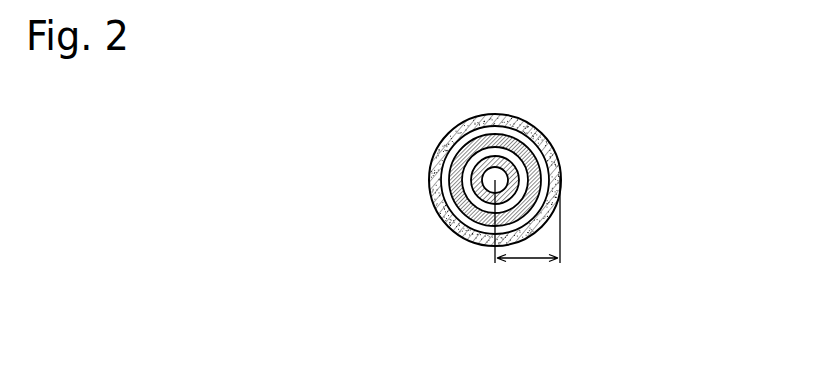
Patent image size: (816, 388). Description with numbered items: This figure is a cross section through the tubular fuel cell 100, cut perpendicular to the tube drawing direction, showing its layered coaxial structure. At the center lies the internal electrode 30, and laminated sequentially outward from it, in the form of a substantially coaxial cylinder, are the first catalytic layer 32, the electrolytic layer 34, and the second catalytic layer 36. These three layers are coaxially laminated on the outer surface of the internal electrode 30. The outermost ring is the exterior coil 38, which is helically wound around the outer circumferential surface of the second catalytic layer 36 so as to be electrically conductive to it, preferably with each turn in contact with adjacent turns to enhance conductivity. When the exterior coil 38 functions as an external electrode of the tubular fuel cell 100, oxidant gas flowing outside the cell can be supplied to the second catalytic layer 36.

The internal electrode 30 is at (473, 181).
The first catalytic layer 32 is at (448, 157).
The electrolytic layer 34 is at (462, 138).
The second catalytic layer 36 is at (483, 135).
The exterior coil 38 is at (510, 122).
The tubular fuel cell 100 is at (520, 316).